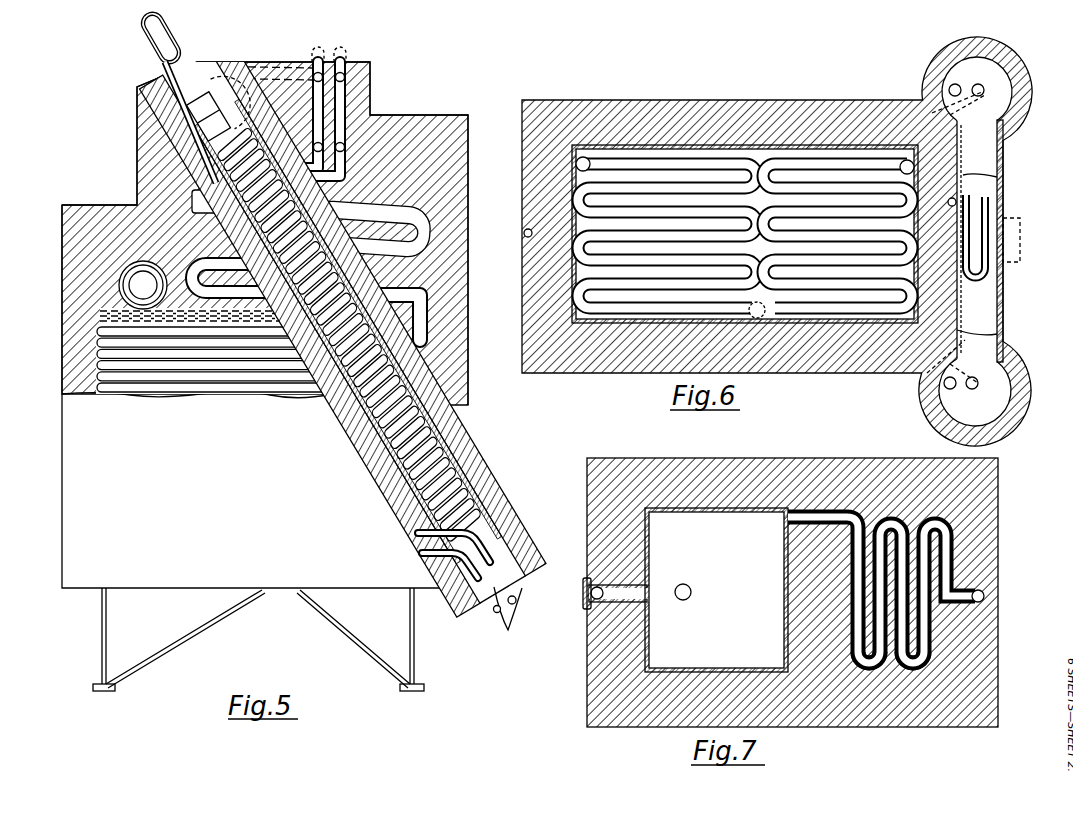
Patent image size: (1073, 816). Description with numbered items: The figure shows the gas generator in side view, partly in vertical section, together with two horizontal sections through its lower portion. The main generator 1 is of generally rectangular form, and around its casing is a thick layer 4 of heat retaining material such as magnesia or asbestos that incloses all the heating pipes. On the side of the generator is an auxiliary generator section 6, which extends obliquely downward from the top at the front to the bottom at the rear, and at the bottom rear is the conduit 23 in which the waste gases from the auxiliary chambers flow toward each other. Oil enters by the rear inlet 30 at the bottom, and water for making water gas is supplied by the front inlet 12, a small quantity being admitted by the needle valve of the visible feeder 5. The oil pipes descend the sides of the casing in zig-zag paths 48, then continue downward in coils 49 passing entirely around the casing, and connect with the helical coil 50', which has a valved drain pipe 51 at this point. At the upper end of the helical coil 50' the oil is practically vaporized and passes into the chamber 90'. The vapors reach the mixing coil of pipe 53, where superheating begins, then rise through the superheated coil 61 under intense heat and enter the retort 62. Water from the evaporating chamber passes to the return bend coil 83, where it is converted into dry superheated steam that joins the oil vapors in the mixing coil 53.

In FIG. 5, the main generator 1 is at (253, 448).
In FIG. 7, the main generator 1 is at (590, 711).
In FIG. 5, the layer of heat retaining material 4 is at (426, 124).
In FIG. 6, the layer of heat retaining material 4 is at (777, 241).
In FIG. 7, the layer of heat retaining material 4 is at (848, 470).
In FIG. 7, the visible feeder 5 is at (900, 672).
In FIG. 5, the auxiliary generator section 6 is at (380, 460).
In FIG. 6, the auxiliary generator section 6 is at (941, 56).
In FIG. 7, the front inlet 12 is at (585, 594).
In FIG. 5, the conduit 23 is at (506, 562).
In FIG. 6, the conduit 23 is at (980, 296).
In FIG. 6, the rear inlet 30 is at (1012, 240).
In FIG. 5, the zig-zag oil pipes 48 is at (428, 220).
In FIG. 5, the oil pipe coils 49 is at (92, 330).
In FIG. 5, the helical coil 50' is at (377, 335).
In FIG. 5, the valved drain pipe 51 is at (503, 618).
In FIG. 6, the mixing coil of pipe 53 is at (826, 167).
In FIG. 6, the superheated coil 61 is at (644, 168).
In FIG. 5, the retort 62 is at (140, 285).
In FIG. 7, the return bend coil 83 is at (927, 567).
In FIG. 5, the chamber 90' is at (172, 105).